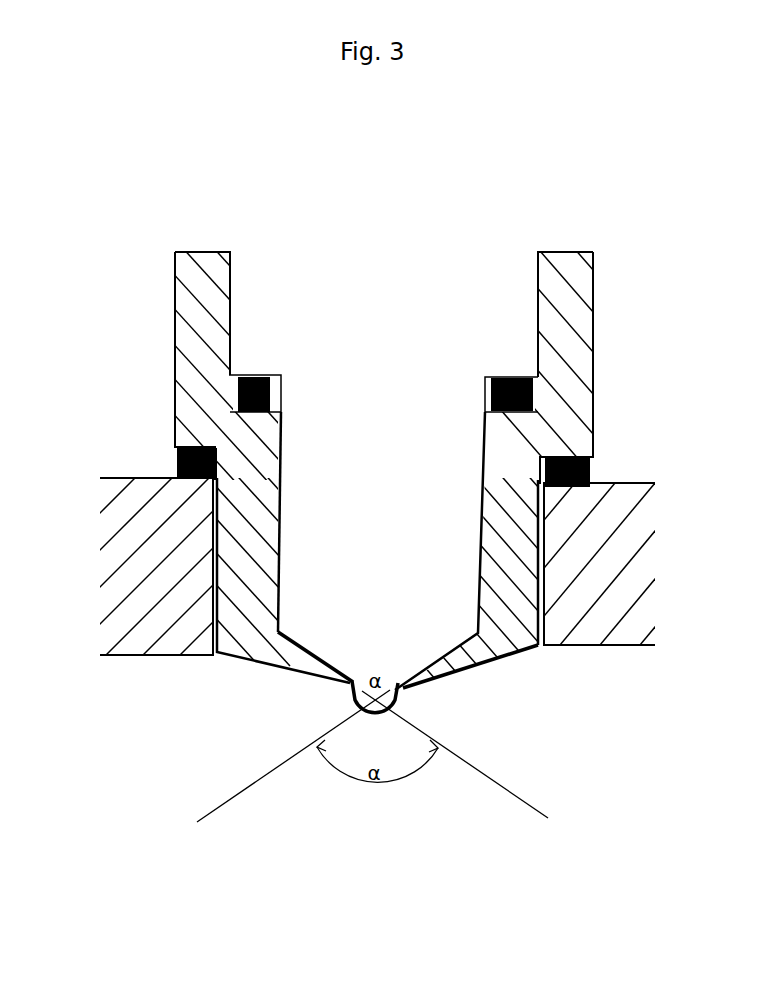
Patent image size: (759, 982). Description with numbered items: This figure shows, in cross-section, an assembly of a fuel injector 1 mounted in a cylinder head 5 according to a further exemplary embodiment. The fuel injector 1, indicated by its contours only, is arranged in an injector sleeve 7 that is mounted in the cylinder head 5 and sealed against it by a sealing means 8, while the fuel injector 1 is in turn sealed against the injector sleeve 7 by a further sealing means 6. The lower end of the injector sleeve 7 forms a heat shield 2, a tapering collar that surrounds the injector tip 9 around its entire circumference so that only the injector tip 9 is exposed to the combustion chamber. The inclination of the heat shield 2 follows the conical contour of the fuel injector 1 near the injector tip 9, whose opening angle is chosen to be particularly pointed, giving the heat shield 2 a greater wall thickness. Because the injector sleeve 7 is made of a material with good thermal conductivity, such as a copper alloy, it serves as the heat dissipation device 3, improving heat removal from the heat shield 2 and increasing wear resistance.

The fuel injector 1 is at (373, 340).
The heat shield 2 is at (470, 657).
The heat dissipation device 3 is at (600, 357).
The cylinder head 5 is at (667, 566).
The sealing means 6 is at (385, 443).
The injector sleeve 7 is at (560, 342).
The sealing means 8 is at (178, 462).
The injector tip 9 is at (398, 703).